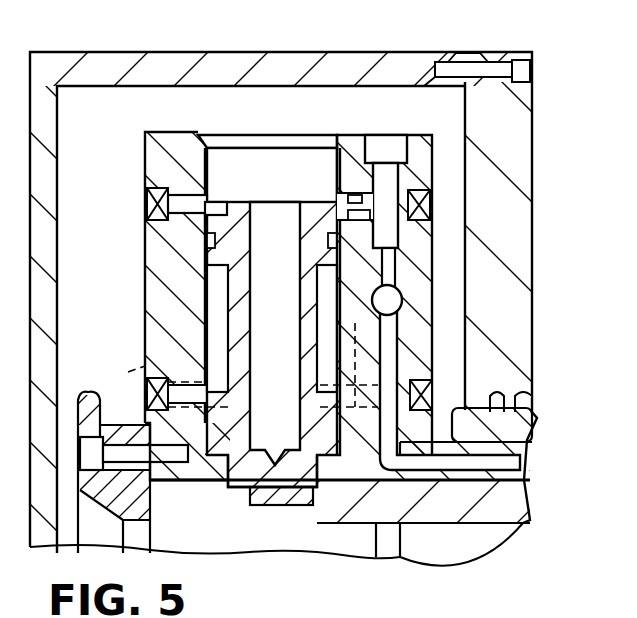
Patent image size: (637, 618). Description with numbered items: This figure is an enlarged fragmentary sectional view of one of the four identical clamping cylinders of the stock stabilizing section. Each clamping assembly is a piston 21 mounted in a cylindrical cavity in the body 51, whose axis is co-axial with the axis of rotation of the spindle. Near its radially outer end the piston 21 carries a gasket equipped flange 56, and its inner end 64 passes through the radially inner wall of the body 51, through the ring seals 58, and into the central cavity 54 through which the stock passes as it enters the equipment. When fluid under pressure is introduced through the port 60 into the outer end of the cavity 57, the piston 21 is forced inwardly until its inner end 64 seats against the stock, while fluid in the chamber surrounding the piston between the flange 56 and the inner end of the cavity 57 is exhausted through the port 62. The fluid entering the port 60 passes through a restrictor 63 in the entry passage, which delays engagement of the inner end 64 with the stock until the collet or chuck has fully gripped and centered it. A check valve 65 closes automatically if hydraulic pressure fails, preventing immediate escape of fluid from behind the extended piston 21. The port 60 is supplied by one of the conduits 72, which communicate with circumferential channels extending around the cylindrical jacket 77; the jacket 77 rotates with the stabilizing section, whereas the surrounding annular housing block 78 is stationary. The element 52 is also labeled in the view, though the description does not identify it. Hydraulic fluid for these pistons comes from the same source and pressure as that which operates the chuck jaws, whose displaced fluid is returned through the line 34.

The annular housing block 78 is at (162, 60).
The cylindrical jacket 77 is at (318, 309).
The cavity 57 is at (211, 208).
The gasket equipped flange 56 is at (207, 262).
The piston 21 is at (245, 305).
The stator block 52 is at (198, 328).
The port 62 is at (90, 395).
The restrictor 63 is at (357, 197).
The body 51 is at (437, 160).
The port 60 is at (397, 228).
The check valve 65 is at (403, 310).
The conduit 72 is at (517, 464).
The ring seals 58 is at (222, 460).
The central cavity 54 is at (243, 538).
The inner end 64 is at (290, 507).
The line 34 is at (535, 617).